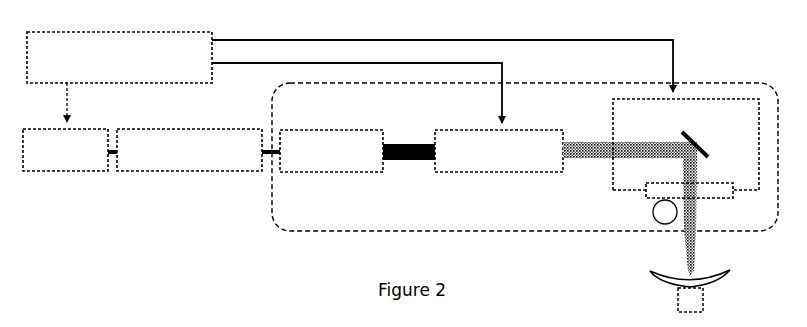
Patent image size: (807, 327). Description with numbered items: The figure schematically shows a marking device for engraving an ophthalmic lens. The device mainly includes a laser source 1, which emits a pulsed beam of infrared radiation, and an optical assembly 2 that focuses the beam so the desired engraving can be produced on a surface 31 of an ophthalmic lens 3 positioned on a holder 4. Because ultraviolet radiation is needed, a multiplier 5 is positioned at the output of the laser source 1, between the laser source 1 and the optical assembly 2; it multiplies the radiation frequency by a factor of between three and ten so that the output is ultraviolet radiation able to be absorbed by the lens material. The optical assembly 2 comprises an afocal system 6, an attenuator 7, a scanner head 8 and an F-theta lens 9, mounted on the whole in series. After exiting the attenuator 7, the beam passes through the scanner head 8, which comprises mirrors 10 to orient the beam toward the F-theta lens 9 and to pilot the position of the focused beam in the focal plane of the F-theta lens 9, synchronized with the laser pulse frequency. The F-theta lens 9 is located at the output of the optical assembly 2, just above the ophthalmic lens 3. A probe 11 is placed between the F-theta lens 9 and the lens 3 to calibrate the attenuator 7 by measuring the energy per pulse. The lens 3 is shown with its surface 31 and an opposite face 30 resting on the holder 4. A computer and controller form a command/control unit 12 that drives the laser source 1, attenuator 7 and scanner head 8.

The command/control unit 12 is at (350, 77).
The laser source 1 is at (70, 150).
The multiplier 5 is at (198, 150).
The optical assembly 2 is at (525, 157).
The afocal system 6 is at (357, 151).
The attenuator 7 is at (566, 151).
The scanner head 8 is at (686, 144).
The mirrors 10 is at (705, 144).
The F-theta lens 9 is at (689, 216).
The probe 11 is at (665, 212).
The ophthalmic lens 3 is at (736, 281).
The surface 31 is at (668, 276).
The lens rear surface 30 is at (685, 285).
The holder 4 is at (694, 298).